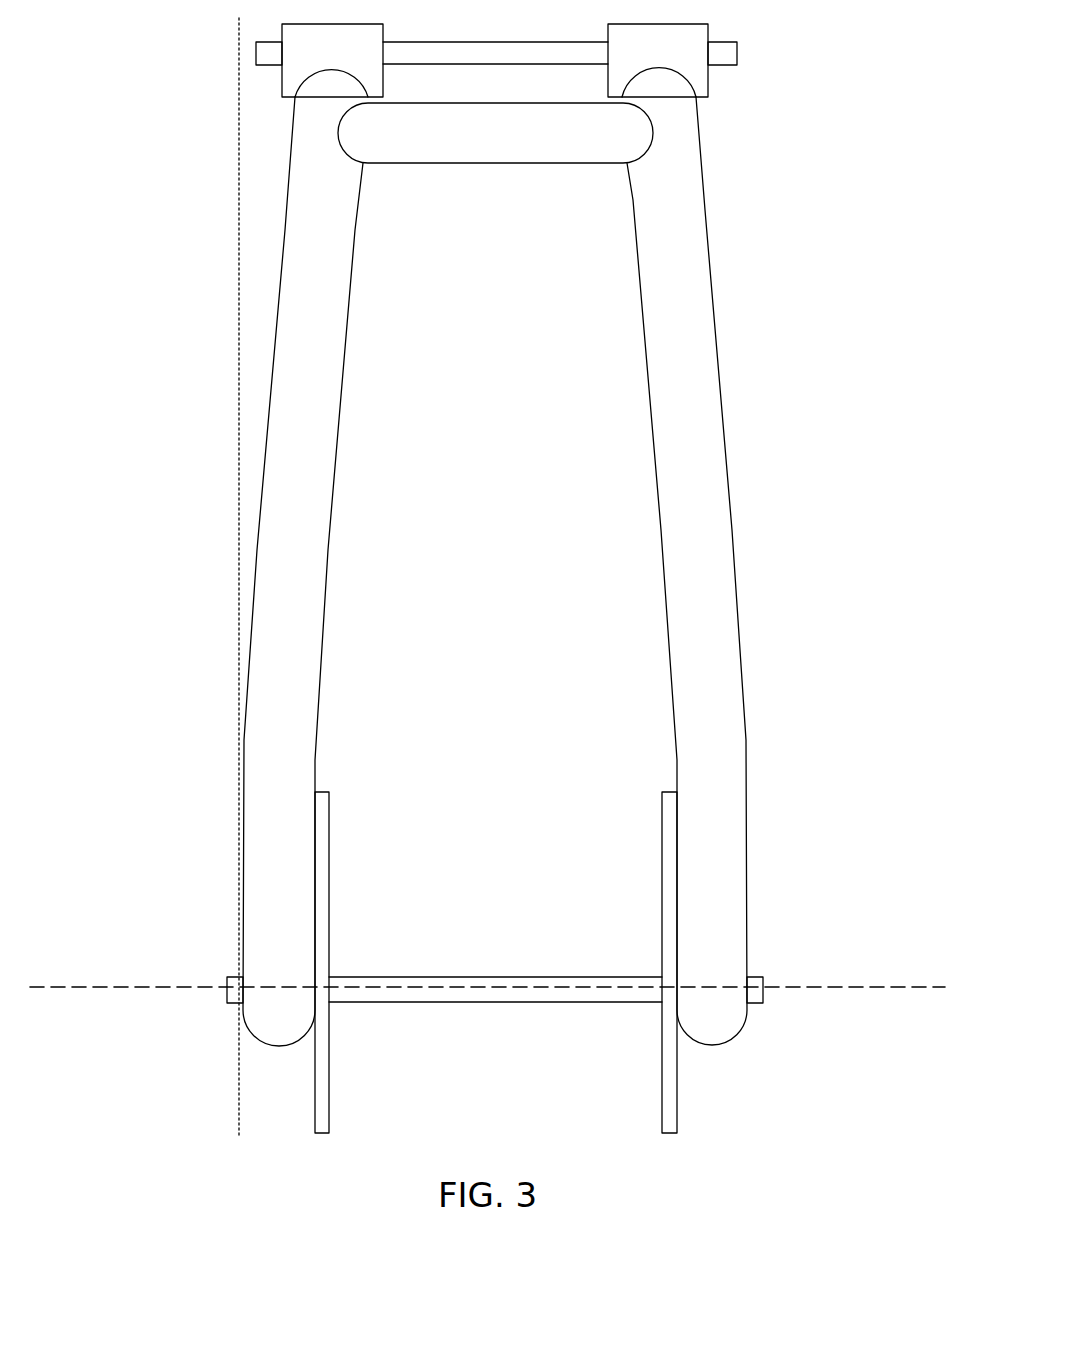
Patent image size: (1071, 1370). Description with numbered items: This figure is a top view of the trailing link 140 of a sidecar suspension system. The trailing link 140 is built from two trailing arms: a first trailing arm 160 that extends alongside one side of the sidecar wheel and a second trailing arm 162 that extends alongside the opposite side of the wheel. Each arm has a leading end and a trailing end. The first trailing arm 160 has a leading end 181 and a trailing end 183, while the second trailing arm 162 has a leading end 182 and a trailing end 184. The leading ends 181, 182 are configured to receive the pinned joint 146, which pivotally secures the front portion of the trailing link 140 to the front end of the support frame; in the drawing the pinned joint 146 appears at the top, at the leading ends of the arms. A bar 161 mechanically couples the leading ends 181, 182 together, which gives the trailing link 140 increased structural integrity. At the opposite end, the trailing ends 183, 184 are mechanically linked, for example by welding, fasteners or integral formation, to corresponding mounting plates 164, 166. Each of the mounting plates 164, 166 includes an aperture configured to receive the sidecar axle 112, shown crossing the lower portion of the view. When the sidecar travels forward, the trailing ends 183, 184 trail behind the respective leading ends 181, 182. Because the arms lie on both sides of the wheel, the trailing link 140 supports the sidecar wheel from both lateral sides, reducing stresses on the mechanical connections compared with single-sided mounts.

The trailing link 140 is at (186, 77).
The pinned joint 146 is at (687, 50).
The bar 161 is at (457, 123).
The first trailing arm 160 is at (292, 458).
The second trailing arm 162 is at (687, 458).
The mounting plate 164 is at (318, 1099).
The mounting plate 166 is at (670, 1107).
The sidecar axle 112 is at (227, 1003).
The leading end 181 is at (250, 261).
The leading end 182 is at (730, 256).
The trailing end 183 is at (208, 815).
The trailing end 184 is at (766, 798).